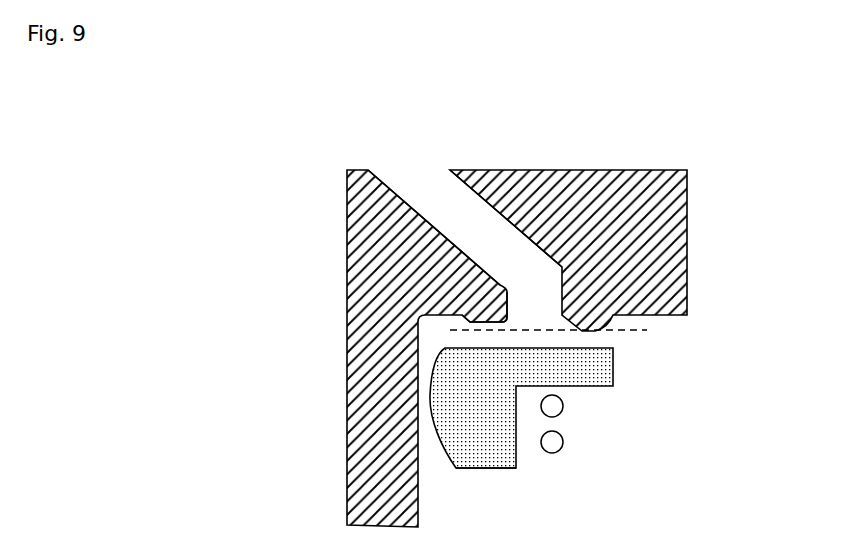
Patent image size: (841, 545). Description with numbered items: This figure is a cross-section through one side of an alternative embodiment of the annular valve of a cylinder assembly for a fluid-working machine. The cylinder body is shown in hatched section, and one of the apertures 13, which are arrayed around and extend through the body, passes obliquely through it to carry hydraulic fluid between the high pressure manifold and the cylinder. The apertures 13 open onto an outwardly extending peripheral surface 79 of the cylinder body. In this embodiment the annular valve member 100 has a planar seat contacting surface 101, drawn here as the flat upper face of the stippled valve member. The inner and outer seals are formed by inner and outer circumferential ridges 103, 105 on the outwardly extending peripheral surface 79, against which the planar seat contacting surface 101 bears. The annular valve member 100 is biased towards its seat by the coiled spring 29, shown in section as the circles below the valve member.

The apertures 13 is at (455, 203).
The coiled spring 29 is at (557, 446).
The outwardly extending peripheral surface 79 is at (437, 313).
The annular valve member 100 is at (473, 462).
The planar seat contacting surface 101 is at (542, 346).
The inner circumferential ridge 103 is at (502, 316).
The outer circumferential ridge 105 is at (593, 331).